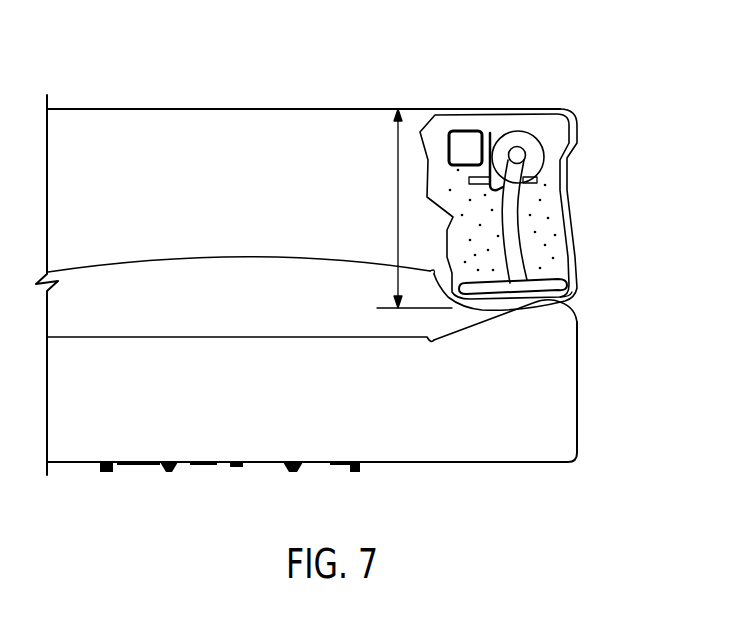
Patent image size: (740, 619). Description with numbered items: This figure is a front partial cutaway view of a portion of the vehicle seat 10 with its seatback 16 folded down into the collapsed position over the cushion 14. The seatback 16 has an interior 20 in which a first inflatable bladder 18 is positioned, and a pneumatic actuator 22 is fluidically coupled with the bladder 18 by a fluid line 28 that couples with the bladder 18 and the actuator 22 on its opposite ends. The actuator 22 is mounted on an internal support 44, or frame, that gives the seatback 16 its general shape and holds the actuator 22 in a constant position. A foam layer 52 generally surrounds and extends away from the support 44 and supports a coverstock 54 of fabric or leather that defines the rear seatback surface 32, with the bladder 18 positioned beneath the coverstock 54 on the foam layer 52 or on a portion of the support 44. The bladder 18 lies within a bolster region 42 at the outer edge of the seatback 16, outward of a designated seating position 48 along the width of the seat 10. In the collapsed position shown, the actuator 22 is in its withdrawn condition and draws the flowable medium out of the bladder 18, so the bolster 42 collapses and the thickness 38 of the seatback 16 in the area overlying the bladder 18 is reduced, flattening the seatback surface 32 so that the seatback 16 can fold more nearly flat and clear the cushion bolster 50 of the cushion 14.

The seat 10 is at (612, 131).
The cushion 14 is at (207, 440).
The seatback 16 is at (308, 104).
The first inflatable bladder 18 is at (567, 285).
The interior 20 is at (539, 225).
The pneumatic actuator 22 is at (524, 140).
The fluid line 28 is at (511, 200).
The rear seatback surface 32 is at (169, 109).
The thickness 38 is at (398, 213).
The bolster region 42 is at (579, 253).
The internal support 44 is at (487, 132).
The designated seating position 48 is at (119, 333).
The cushion bolster 50 is at (563, 325).
The foam layer 52 is at (462, 204).
The coverstock 54 is at (571, 300).